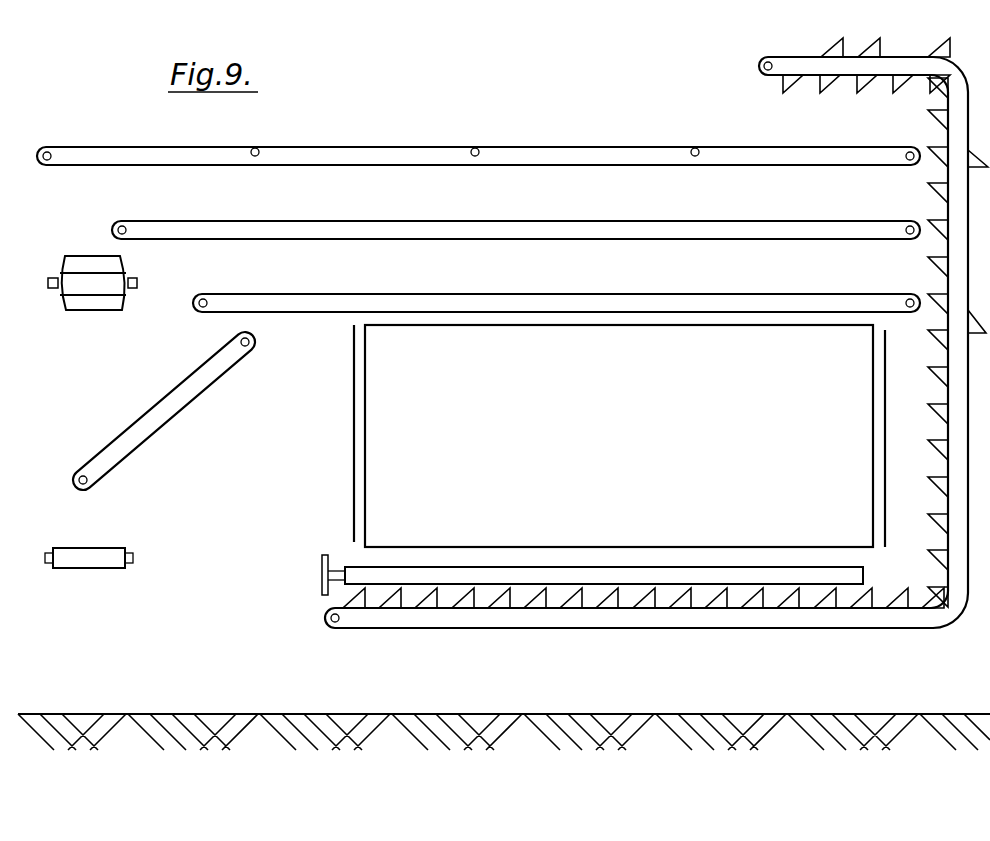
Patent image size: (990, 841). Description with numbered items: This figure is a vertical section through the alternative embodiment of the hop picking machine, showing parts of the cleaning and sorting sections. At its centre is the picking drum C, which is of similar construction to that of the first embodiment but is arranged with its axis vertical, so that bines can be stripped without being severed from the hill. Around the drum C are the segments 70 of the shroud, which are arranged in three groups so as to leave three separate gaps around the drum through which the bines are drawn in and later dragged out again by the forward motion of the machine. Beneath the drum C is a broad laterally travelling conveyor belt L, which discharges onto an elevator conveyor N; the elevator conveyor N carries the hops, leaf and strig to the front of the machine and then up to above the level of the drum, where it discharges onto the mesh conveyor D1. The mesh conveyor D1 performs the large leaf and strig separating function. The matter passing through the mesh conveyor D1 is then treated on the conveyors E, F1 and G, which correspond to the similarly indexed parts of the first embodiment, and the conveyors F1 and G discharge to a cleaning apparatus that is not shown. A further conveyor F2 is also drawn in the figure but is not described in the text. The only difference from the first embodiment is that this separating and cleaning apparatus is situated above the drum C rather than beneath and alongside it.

The mesh conveyor D1 is at (518, 152).
The conveyor E is at (505, 227).
The conveyor F1 is at (492, 300).
The conveyor G is at (73, 255).
The link F2 is at (85, 556).
The picking drum C is at (619, 436).
The segments of the shroud 70 is at (353, 350).
The laterally travelling conveyor belt L is at (870, 578).
The elevator conveyor N is at (850, 78).